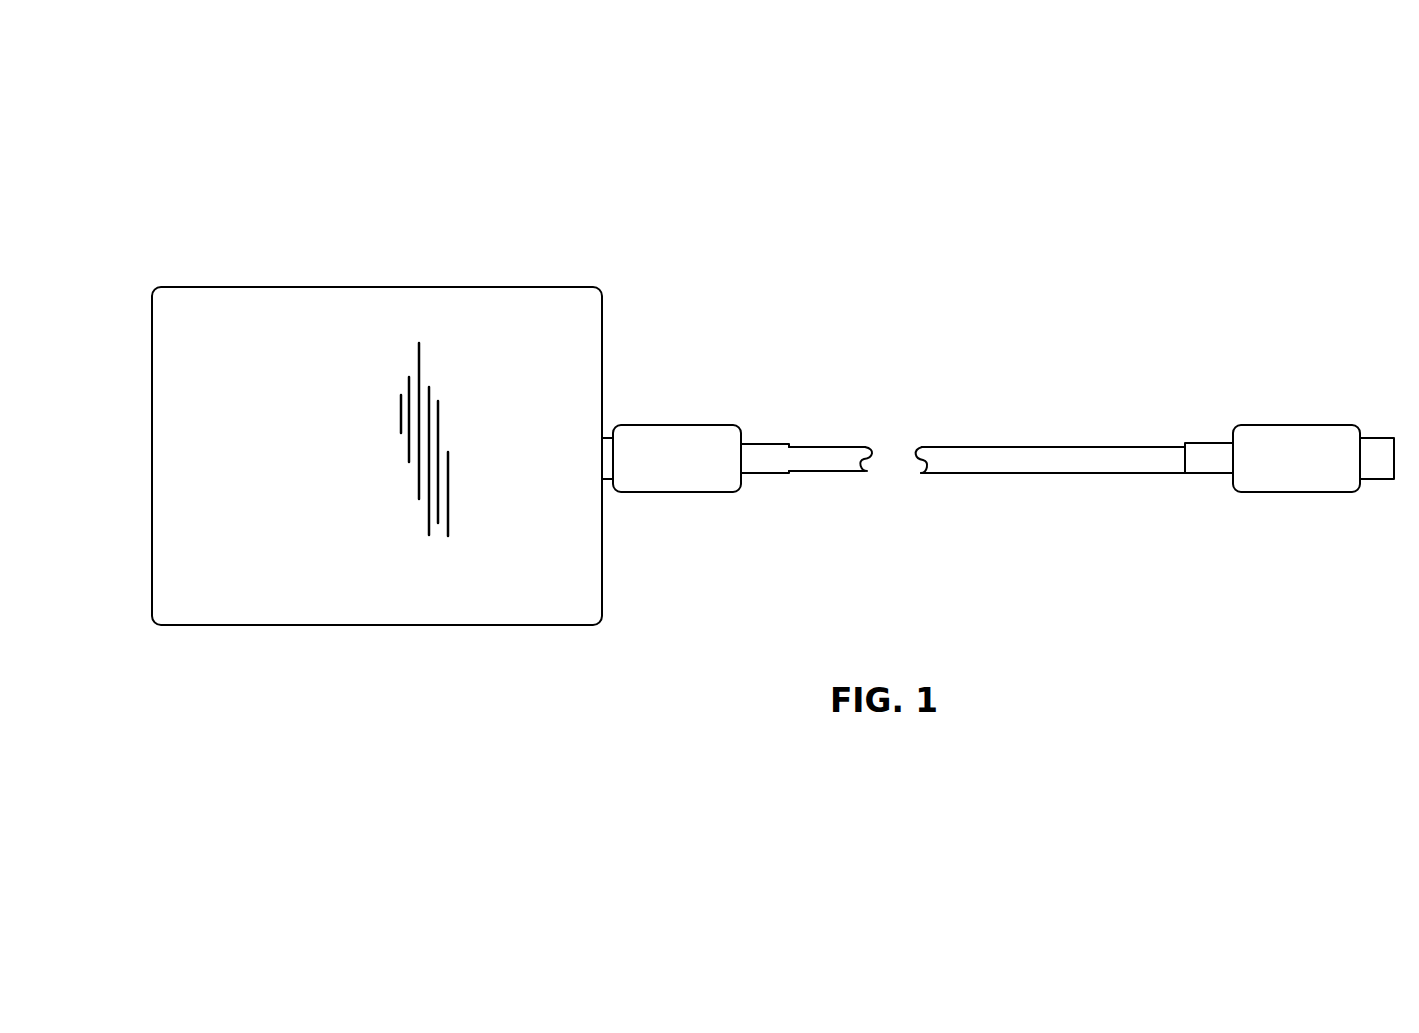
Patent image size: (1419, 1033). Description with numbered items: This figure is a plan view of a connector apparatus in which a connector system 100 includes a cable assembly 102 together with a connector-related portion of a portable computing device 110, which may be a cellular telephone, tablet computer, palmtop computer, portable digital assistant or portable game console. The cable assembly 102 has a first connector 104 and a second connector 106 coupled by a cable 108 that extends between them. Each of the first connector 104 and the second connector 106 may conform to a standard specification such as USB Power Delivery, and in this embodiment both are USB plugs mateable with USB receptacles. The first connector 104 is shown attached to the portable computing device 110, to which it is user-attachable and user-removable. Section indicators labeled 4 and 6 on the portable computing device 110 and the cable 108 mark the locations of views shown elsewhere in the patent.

The connector system 100 is at (256, 133).
The portable computing device (PCD) 110 is at (607, 253).
The cable assembly 102 is at (769, 325).
The first connector 104 is at (706, 492).
The second connector 106 is at (1297, 492).
The cable 108 is at (1020, 473).
The section line 4- 4 is at (143, 568).
The section line 6- 6 is at (143, 456).